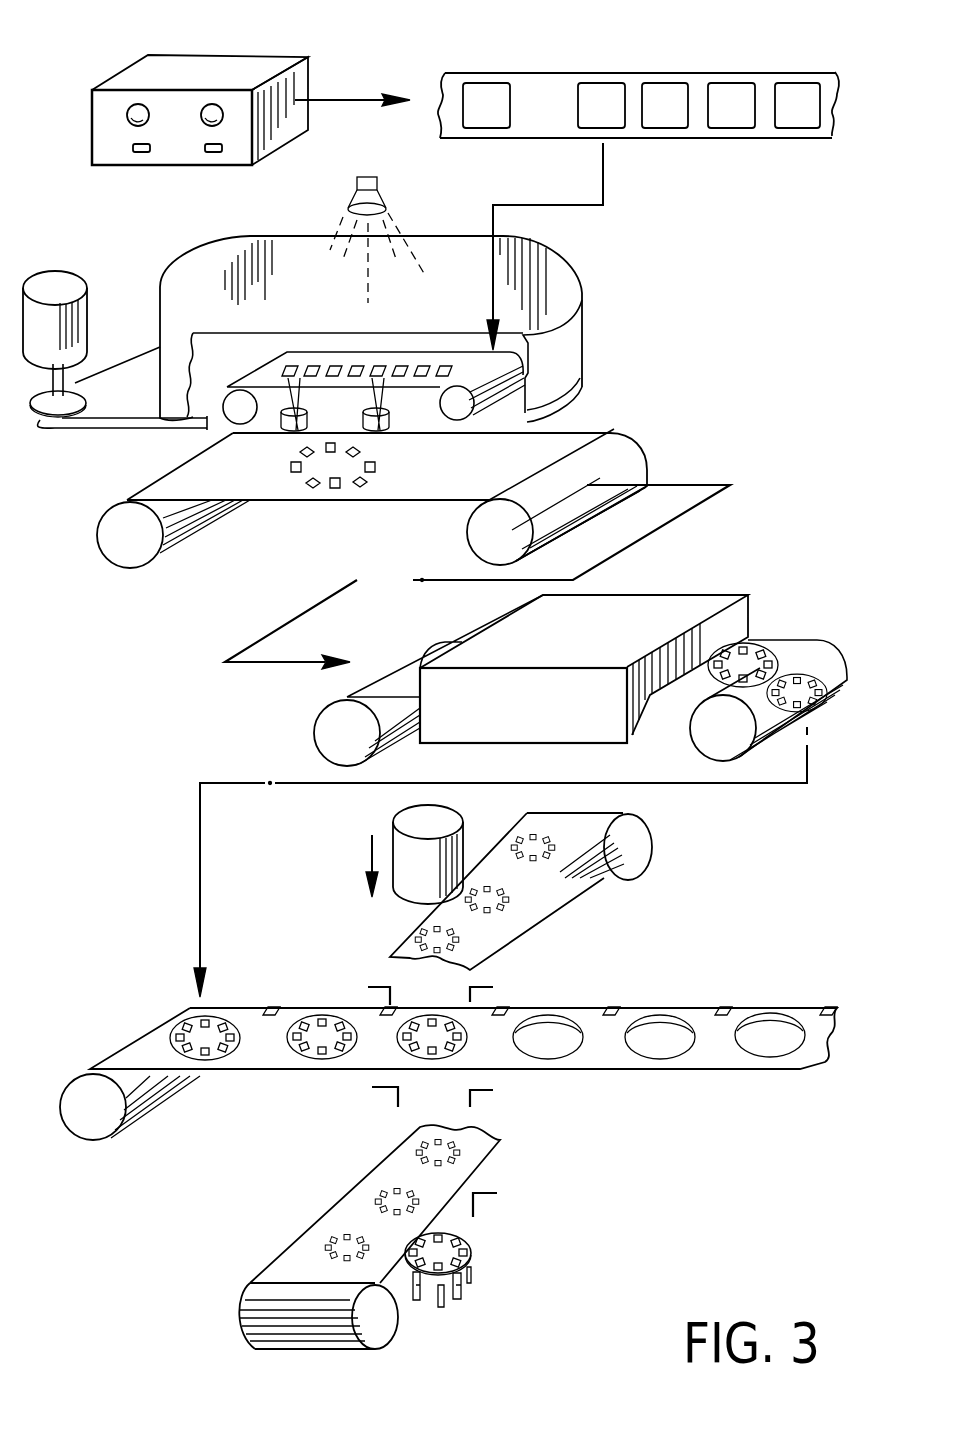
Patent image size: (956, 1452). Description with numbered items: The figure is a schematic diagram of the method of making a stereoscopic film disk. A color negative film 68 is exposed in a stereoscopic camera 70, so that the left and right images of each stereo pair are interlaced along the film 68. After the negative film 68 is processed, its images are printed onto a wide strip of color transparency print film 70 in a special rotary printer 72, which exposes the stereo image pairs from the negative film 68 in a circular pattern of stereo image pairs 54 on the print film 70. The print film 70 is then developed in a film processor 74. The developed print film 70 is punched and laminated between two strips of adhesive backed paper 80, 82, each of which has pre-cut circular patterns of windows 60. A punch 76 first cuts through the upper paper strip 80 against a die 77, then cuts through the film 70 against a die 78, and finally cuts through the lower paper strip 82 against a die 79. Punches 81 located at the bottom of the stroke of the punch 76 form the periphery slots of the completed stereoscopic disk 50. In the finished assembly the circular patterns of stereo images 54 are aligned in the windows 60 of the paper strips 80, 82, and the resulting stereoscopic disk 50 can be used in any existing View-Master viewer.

The stereoscopic disk 50 is at (487, 1292).
The stereo image pairs 54 is at (330, 485).
The windows 60 is at (560, 857).
The color negative film 68 is at (555, 91).
The color transparency print film 70 is at (261, 64).
The rotary printer 72 is at (608, 262).
The film processor 74 is at (697, 600).
The punch 76 is at (395, 818).
The die 77 is at (493, 992).
The die 78 is at (493, 1097).
The die 79 is at (497, 1205).
The adhesive backed paper strip 80 is at (633, 848).
The punches 81 is at (440, 1307).
The adhesive backed paper strip 82 is at (373, 1327).